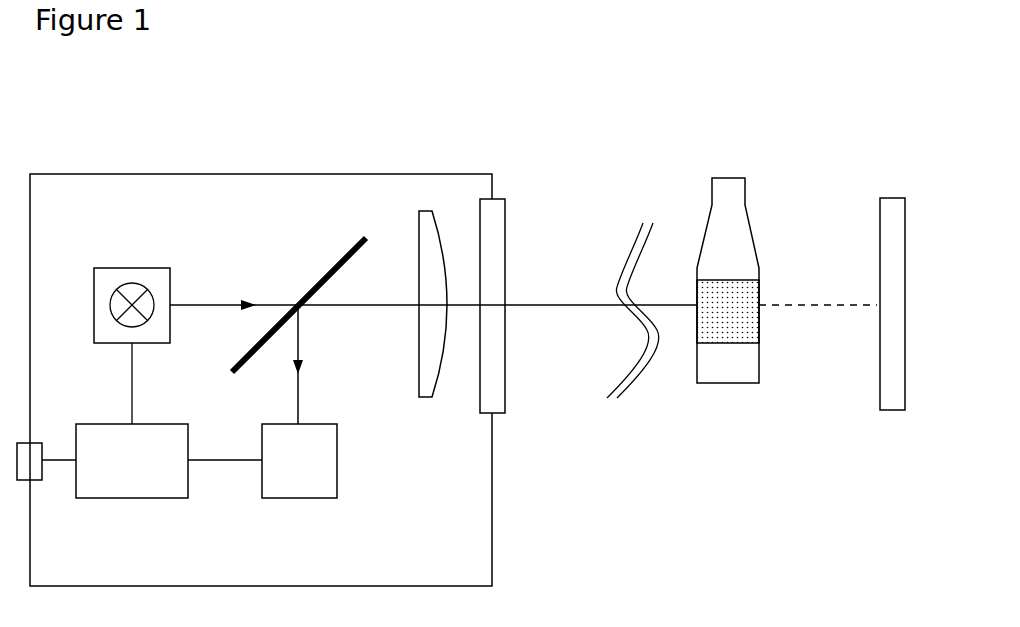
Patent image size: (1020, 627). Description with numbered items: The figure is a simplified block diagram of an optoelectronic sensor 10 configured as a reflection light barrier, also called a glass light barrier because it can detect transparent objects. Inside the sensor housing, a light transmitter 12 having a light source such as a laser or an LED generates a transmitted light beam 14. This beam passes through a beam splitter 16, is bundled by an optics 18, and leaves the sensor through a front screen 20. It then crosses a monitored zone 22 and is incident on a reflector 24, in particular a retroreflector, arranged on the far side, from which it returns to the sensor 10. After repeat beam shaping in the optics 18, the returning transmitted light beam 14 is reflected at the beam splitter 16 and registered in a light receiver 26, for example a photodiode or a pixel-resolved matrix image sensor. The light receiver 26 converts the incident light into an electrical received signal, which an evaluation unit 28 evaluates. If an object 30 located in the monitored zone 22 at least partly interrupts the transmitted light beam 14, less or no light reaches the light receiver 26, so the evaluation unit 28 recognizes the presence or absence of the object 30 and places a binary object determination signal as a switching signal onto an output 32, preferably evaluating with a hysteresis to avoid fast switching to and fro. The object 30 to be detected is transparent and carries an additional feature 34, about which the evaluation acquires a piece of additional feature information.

The optoelectronic sensor 10 is at (247, 112).
The light transmitter 12 is at (112, 268).
The transmitted light beam 14 is at (583, 305).
The beam splitter 16 is at (304, 293).
The optics 18 is at (430, 228).
The front screen 20 is at (493, 265).
The monitored zone 22 is at (678, 148).
The reflector 24 is at (892, 412).
The light receiver 26 is at (343, 473).
The evaluation unit 28 is at (90, 500).
The object 30 is at (743, 367).
The output 32 is at (30, 455).
The additional feature 34 is at (733, 302).